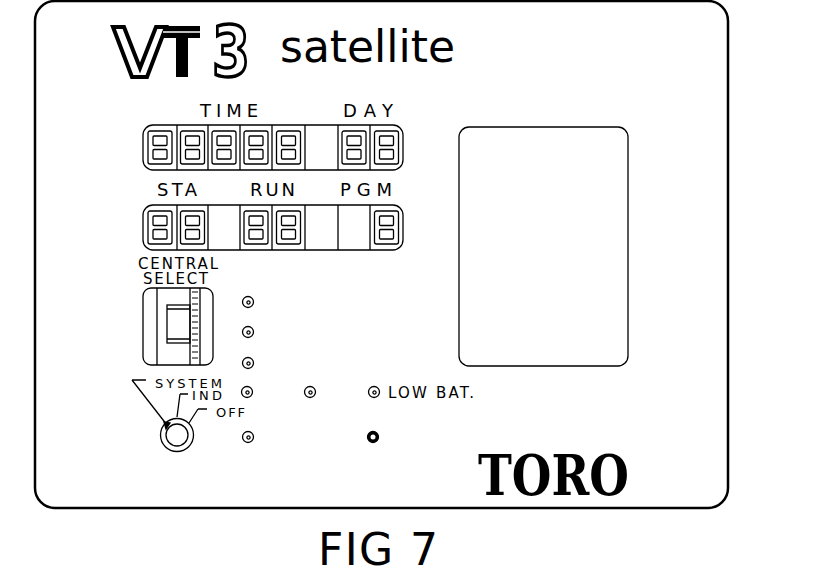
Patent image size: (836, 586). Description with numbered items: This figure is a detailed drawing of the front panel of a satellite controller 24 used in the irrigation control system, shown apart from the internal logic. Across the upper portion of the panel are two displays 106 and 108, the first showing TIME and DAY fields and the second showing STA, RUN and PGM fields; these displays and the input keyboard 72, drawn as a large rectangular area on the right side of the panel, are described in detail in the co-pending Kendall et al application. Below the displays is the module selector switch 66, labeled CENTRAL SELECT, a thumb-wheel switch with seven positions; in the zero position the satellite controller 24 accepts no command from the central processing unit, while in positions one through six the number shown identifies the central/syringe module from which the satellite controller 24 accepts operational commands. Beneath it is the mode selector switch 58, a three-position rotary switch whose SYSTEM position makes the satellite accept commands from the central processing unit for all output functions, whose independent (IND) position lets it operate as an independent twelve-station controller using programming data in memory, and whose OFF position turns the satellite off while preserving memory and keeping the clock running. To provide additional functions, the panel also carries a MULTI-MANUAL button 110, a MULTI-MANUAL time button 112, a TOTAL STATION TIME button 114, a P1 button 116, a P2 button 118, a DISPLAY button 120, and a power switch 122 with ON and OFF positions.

The satellite controller 24 is at (718, 417).
The mode selector switch 58 is at (165, 447).
The module selector switch 66 is at (150, 330).
The input keyboard 72 is at (609, 275).
The display 106 is at (147, 151).
The display 108 is at (147, 214).
The MULTI-MANUAL button 110 is at (252, 297).
The MULTI-MANUAL time button 112 is at (244, 327).
The TOTAL STATION TIME button 114 is at (252, 357).
The P1 button 116 is at (254, 398).
The P2 button 118 is at (316, 398).
The DISPLAY button 120 is at (248, 441).
The power switch 122 is at (379, 441).